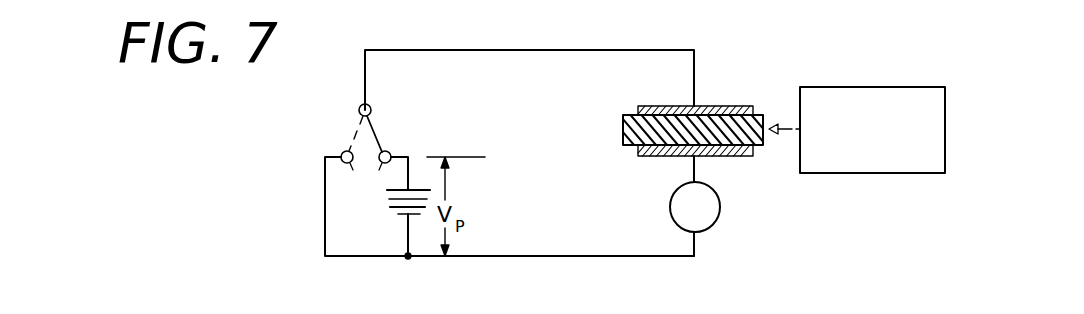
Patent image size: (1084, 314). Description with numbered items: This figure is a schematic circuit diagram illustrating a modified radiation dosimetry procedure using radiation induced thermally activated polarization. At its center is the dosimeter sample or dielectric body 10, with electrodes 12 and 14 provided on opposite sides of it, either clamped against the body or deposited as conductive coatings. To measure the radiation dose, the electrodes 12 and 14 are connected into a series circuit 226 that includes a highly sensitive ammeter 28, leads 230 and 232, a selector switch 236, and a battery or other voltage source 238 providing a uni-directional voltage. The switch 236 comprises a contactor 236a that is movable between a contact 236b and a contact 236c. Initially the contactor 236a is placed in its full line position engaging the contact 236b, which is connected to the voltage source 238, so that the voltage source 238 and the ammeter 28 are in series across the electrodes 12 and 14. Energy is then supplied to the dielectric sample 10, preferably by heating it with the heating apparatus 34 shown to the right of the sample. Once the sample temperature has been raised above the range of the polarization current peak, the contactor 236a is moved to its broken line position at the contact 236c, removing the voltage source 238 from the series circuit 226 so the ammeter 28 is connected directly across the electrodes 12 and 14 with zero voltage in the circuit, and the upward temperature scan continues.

The dielectric body 10 is at (623, 130).
The electrode 12 is at (641, 105).
The electrode 14 is at (648, 157).
The ammeter 28 is at (672, 215).
The heating apparatus 34 is at (892, 87).
The series circuit 226 is at (530, 48).
The lead 230 is at (697, 75).
The lead 232 is at (698, 165).
The selector switch 236 is at (368, 125).
The contactor 236a is at (370, 107).
The contact 236b is at (391, 152).
The contact 236c is at (343, 152).
The voltage source 238 is at (388, 199).